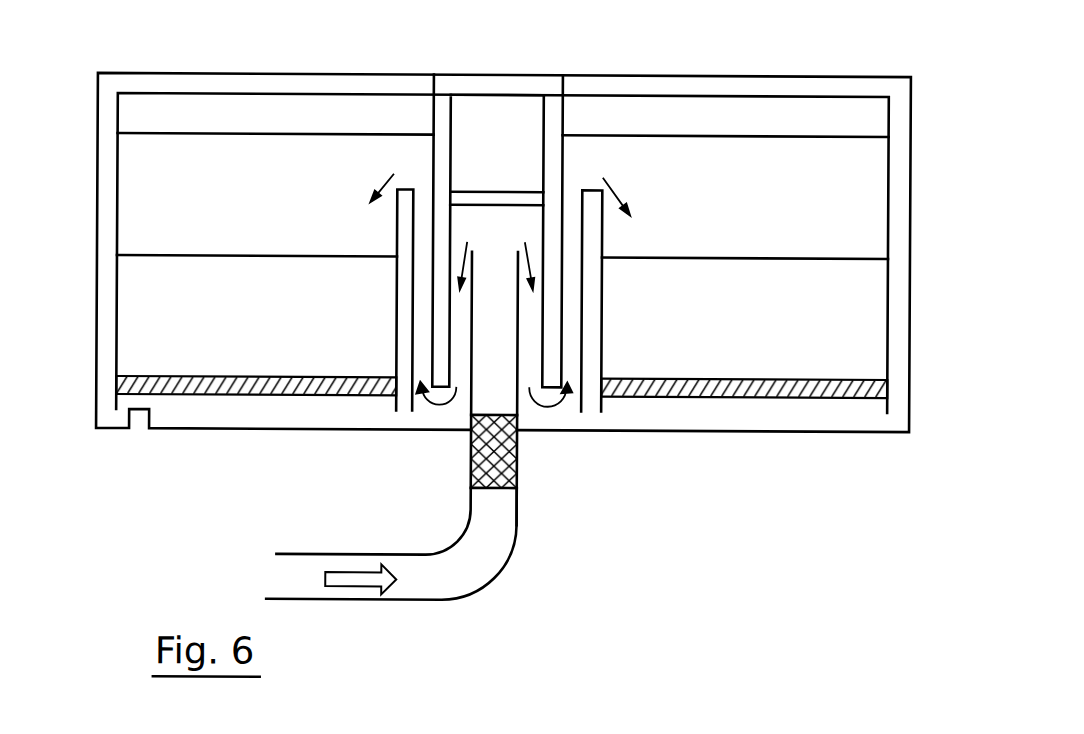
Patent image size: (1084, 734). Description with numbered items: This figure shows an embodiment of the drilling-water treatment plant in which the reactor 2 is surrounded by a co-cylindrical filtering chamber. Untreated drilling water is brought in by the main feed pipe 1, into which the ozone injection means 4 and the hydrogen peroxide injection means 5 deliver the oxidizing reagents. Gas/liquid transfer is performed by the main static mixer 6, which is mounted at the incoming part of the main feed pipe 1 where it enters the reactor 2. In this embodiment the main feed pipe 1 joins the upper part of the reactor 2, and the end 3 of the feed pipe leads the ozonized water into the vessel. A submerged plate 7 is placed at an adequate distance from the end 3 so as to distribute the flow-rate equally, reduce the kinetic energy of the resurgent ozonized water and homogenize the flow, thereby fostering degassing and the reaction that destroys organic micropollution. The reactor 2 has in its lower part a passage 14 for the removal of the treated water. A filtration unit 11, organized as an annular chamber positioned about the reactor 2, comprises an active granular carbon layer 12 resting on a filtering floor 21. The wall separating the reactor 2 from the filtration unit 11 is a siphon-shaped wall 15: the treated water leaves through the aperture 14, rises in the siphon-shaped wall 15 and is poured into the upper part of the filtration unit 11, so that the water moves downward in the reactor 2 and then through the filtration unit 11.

The main feed pipe 1 is at (305, 583).
The reactor 2 is at (497, 230).
The end of the feed pipe 3 is at (518, 248).
The ozone injection means 4 is at (493, 546).
The hydrogen peroxide injection means 5 is at (445, 576).
The main static mixer 6 is at (474, 472).
The submerged plate 7 is at (473, 199).
The filtration unit 11 is at (757, 432).
The active granular carbon layer 12 is at (193, 302).
The passage 14 is at (545, 412).
The siphon-shaped wall 15 is at (562, 192).
The filtering floor 21 is at (228, 378).